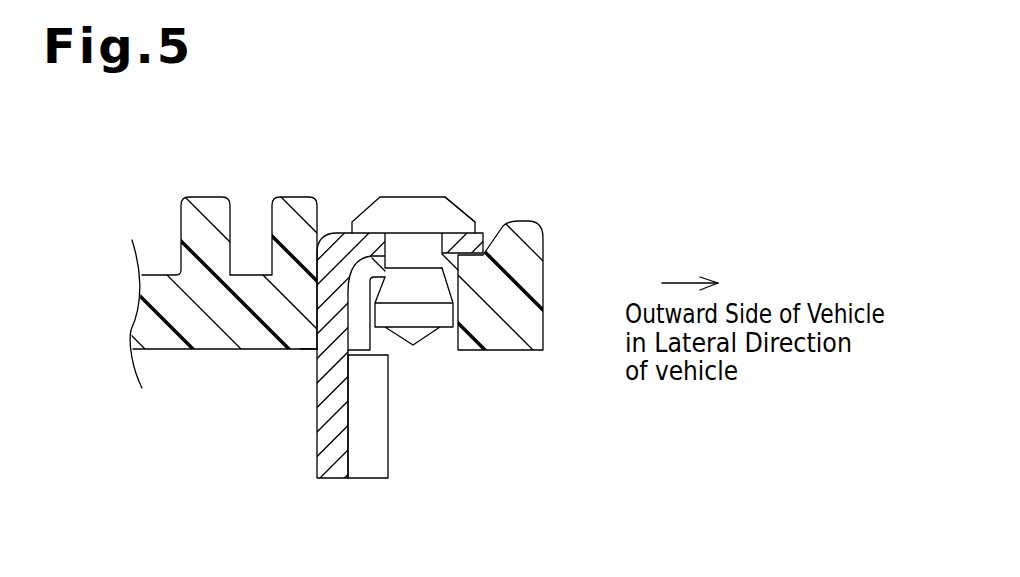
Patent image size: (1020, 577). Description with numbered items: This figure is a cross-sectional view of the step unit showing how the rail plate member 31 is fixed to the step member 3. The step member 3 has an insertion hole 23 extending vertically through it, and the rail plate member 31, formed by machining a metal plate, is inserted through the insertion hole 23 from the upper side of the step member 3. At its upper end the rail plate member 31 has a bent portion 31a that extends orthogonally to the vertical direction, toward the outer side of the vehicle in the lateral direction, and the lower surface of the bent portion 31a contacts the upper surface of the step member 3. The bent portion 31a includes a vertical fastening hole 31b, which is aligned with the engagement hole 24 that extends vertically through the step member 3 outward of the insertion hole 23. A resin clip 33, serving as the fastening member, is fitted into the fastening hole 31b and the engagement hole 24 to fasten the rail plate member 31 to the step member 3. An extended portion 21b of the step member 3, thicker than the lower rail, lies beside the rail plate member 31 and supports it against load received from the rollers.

The step member 3 is at (133, 318).
The insertion hole 23 is at (316, 352).
The engagement hole 24 is at (443, 327).
The extended portion 21b is at (388, 450).
The rail plate member 31 is at (330, 478).
The bent portion 31a is at (487, 252).
The fastening hole 31b is at (395, 233).
The resin clip 33 is at (465, 218).